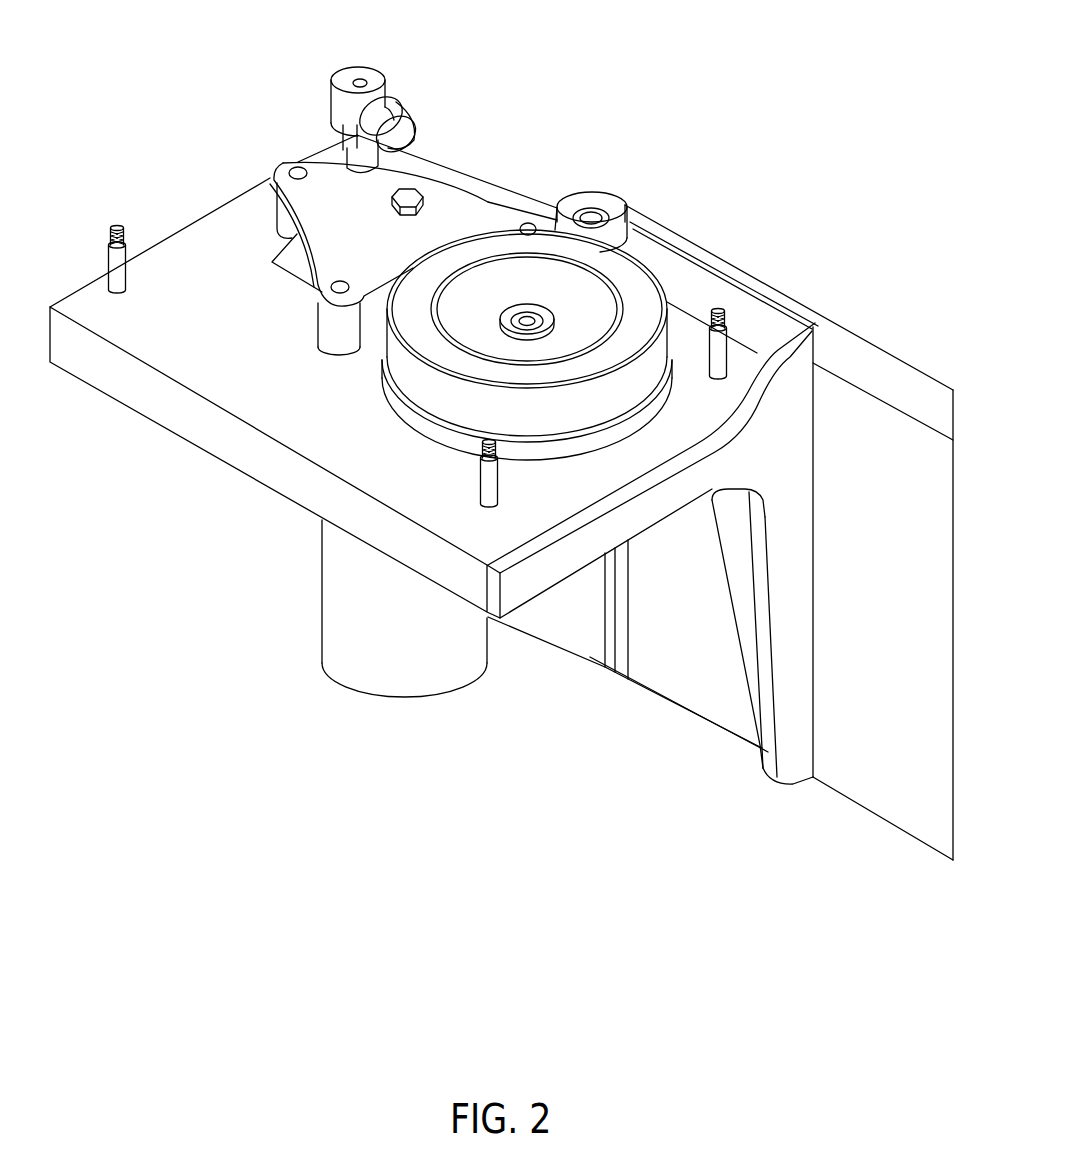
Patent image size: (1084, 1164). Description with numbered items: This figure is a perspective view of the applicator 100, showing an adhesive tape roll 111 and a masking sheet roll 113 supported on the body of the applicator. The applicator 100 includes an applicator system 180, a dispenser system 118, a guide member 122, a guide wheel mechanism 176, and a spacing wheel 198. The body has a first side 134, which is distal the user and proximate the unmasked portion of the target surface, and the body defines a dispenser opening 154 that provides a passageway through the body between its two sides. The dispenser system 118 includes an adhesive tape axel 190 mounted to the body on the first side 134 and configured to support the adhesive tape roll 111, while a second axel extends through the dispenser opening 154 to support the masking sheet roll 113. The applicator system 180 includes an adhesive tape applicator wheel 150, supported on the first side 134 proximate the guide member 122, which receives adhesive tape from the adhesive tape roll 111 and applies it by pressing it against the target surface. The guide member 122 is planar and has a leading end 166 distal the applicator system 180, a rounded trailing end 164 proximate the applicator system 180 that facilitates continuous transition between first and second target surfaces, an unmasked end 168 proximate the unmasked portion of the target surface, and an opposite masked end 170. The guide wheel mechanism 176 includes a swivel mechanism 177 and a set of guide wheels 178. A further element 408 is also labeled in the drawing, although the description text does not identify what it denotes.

The applicator 100 is at (78, 104).
The adhesive tape roll 111 is at (527, 366).
The masking sheet roll 113 is at (345, 636).
The dispenser system 118 is at (516, 178).
The guide member 122 is at (720, 532).
The first side 134 is at (162, 257).
The adhesive tape applicator wheel 150 is at (615, 217).
The dispenser opening 154 is at (290, 258).
The trailing end 164 is at (813, 550).
The leading end 166 is at (627, 618).
The unmasked end 168 is at (727, 268).
The masked end 170 is at (727, 730).
The guide wheel mechanism 176 is at (418, 127).
The swivel mechanism 177 is at (360, 150).
The set of guide wheels 178 is at (386, 105).
The applicator system 180 is at (604, 175).
The adhesive tape axel 190 is at (538, 314).
The spacing wheel 198 is at (342, 78).
The base plate 408 is at (403, 376).